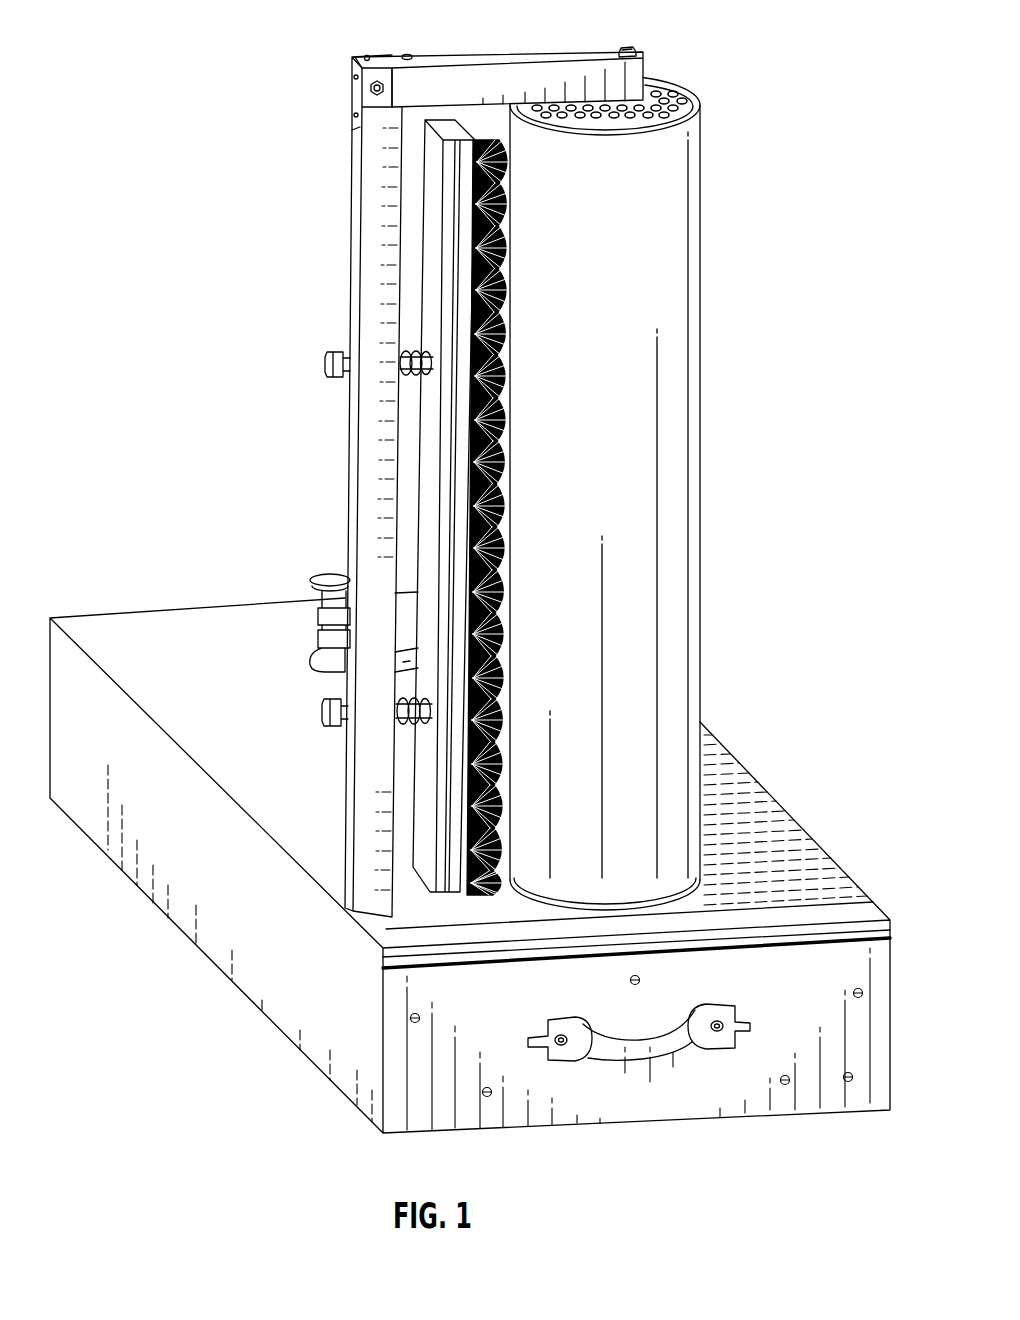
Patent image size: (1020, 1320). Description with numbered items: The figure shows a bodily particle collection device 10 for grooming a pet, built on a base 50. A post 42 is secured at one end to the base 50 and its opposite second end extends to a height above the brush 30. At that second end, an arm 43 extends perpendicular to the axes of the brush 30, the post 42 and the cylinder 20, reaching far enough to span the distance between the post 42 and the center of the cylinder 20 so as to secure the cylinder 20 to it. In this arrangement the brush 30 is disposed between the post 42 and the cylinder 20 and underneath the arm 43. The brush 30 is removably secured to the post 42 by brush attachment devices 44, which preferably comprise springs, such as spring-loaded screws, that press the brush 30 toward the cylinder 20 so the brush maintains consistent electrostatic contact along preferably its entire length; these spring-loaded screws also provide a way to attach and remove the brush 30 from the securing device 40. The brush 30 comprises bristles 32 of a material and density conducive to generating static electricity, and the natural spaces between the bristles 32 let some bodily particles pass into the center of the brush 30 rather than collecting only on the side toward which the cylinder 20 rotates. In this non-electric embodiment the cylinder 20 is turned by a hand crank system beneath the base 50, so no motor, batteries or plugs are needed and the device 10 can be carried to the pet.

The bodily particle collection device 10 is at (470, 568).
The cylinder 20 is at (643, 240).
The brush 30 is at (430, 254).
The bristles 32 is at (478, 428).
The securing device 40 is at (370, 97).
The post 42 is at (373, 300).
The arm 43 is at (484, 77).
The brush attachment devices 44 is at (400, 365).
The base 50 is at (826, 868).